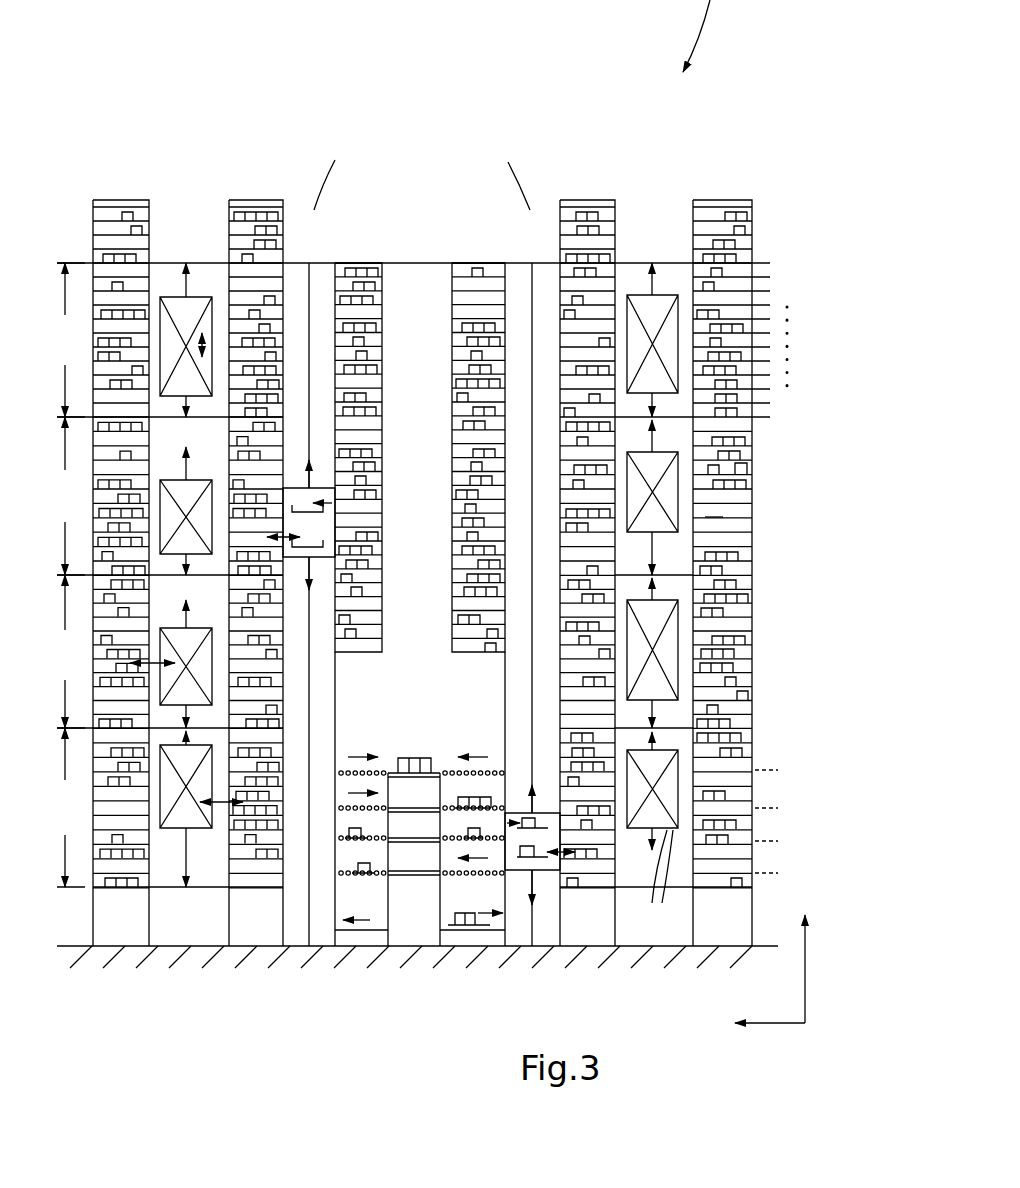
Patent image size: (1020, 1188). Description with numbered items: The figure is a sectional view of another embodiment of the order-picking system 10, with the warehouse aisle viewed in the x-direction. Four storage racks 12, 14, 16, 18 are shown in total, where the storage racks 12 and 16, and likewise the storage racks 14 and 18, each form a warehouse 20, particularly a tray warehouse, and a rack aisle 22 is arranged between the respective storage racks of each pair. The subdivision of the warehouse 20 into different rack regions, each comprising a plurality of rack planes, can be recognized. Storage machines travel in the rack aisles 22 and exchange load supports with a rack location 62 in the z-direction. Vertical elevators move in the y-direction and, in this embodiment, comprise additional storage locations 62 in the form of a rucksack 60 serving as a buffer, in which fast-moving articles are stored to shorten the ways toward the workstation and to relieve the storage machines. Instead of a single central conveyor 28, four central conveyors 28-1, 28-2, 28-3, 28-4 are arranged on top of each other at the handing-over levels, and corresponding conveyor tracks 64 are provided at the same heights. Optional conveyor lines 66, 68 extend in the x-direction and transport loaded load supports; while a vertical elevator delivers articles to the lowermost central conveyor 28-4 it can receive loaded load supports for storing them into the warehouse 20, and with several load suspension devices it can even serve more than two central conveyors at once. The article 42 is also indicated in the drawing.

The order-picking system 10 is at (443, 183).
The storage rack 12 is at (250, 200).
The storage rack 14 is at (572, 200).
The storage rack 16 is at (98, 200).
The storage rack 18 is at (712, 200).
The warehouse 20 is at (162, 105).
The rack aisle 22 is at (181, 207).
The central conveyor 28 is at (410, 735).
The central conveyor 28-1 is at (430, 768).
The central conveyor 28-2 is at (398, 792).
The central conveyor 28-3 is at (398, 823).
The central conveyor 28-4 is at (396, 878).
The storage container 42 is at (745, 473).
The rucksack 60 is at (385, 308).
The storage location 62 is at (740, 520).
The conveyor track 64 is at (492, 770).
The conveyor line 66 is at (367, 948).
The conveyor line 68 is at (467, 948).